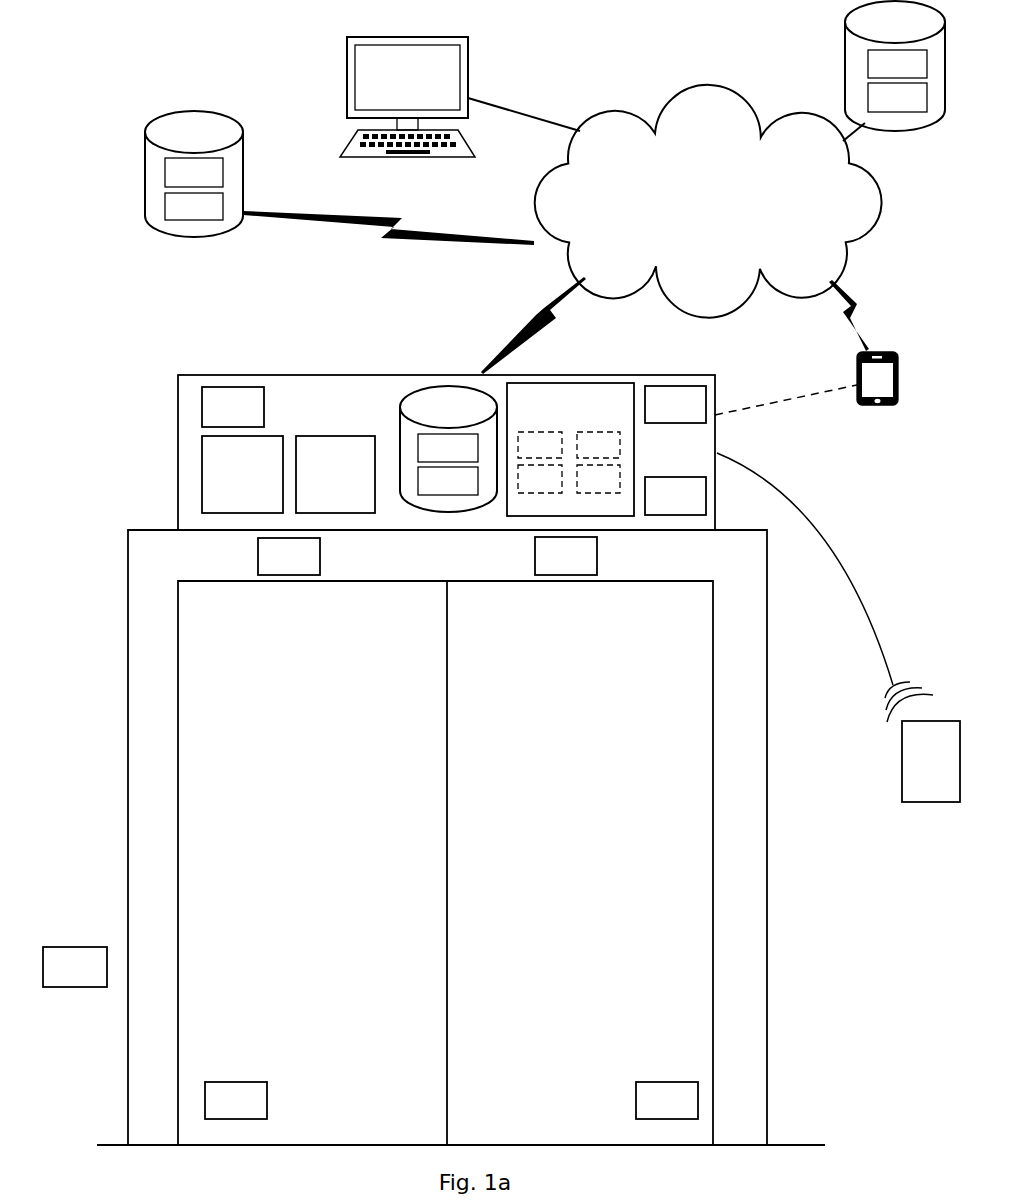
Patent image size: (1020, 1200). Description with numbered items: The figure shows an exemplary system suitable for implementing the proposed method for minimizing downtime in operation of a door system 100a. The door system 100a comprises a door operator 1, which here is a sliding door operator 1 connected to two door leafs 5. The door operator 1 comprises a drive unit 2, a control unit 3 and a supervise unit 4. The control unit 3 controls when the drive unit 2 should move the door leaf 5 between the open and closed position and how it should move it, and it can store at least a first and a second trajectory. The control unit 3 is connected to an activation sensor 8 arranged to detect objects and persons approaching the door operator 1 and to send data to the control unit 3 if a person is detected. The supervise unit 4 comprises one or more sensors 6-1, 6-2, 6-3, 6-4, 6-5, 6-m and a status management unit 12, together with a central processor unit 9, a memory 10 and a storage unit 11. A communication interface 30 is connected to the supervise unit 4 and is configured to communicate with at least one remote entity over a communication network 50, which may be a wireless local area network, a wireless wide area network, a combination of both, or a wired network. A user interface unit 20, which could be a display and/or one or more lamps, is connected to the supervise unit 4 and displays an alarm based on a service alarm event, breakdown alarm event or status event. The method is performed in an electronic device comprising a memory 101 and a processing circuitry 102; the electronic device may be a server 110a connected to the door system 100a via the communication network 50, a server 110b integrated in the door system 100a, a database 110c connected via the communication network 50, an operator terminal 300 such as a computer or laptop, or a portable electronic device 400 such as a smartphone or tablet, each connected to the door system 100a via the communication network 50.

The door system 100a is at (165, 328).
The door operator 1 is at (362, 360).
The drive unit 2 is at (242, 474).
The control unit 3 is at (335, 474).
The supervise unit 4 is at (570, 449).
The door leaf 5 is at (461, 837).
The sensor 6-1 is at (536, 394).
The sensor 6-2 is at (289, 556).
The sensor 6-3 is at (233, 407).
The sensor 6-4 is at (236, 1100).
The sensor 6-5 is at (75, 967).
The sensor 6-m is at (667, 1100).
The activation sensor 8 is at (566, 556).
The central processor unit 9 is at (540, 445).
The memory 10 is at (540, 479).
The storage unit 11 is at (598, 445).
The status management unit 12 is at (598, 479).
The user interface unit 20 is at (838, 627).
The communication interface 30 is at (675, 496).
The communication network 50 is at (708, 201).
The memory 101 is at (546, 256).
The processing circuitry 102 is at (546, 289).
The server 110a is at (194, 174).
The server 110b is at (448, 449).
The database 110c is at (894, 71).
The operator terminal 300 is at (460, 118).
The portable electronic device 400 is at (807, 402).